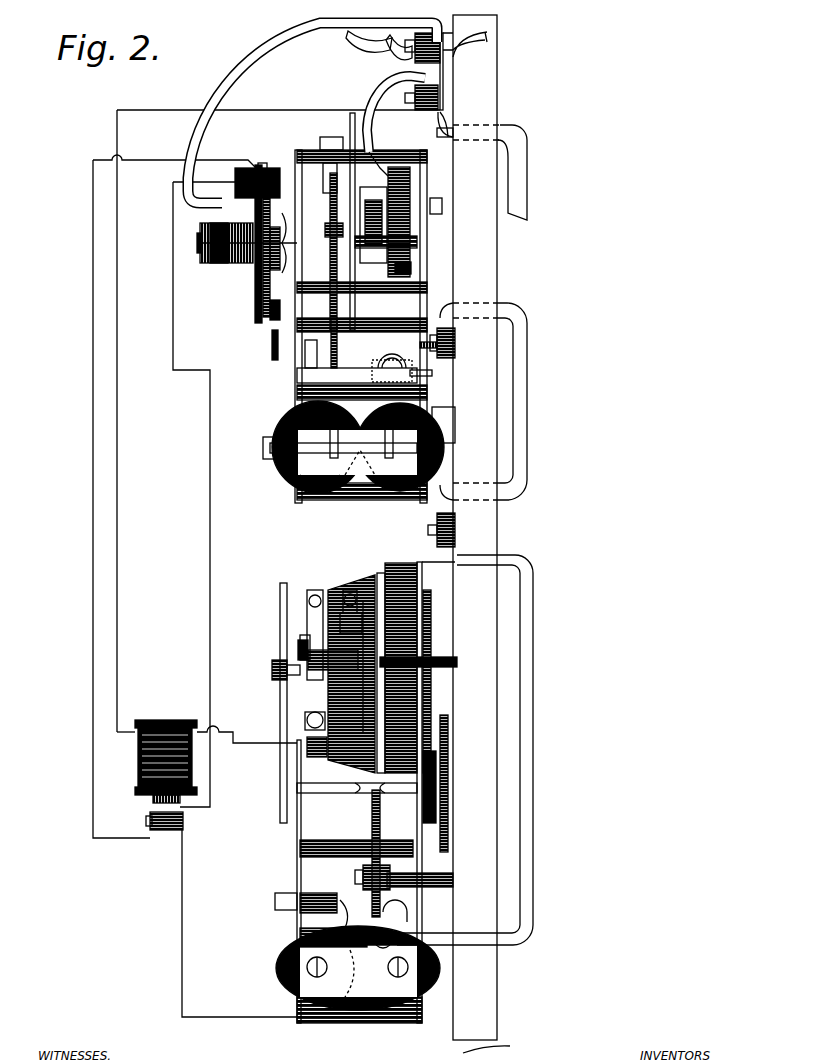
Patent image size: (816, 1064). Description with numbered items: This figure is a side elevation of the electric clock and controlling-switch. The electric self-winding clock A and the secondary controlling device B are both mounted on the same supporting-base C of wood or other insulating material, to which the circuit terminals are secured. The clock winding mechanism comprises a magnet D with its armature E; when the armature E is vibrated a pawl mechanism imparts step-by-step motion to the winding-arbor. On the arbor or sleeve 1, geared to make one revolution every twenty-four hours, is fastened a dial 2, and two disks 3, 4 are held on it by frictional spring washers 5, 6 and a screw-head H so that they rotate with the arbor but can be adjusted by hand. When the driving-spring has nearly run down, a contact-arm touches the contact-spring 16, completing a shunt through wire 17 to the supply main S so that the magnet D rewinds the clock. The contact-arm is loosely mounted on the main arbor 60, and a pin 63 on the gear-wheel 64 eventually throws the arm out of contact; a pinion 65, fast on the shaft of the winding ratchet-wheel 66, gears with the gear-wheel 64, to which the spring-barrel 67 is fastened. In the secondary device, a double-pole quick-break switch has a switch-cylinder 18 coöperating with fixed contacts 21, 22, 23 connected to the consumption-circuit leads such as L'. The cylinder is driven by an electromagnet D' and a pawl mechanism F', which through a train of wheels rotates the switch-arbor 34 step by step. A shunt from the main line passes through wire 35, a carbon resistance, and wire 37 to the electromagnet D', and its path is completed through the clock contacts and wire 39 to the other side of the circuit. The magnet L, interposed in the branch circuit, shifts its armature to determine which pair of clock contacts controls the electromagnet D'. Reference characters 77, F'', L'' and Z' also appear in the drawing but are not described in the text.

The arbor or sleeve 1 is at (279, 243).
The dial 2 is at (264, 168).
The disk 3 is at (247, 297).
The disk 4 is at (256, 314).
The spring washer 5 is at (244, 209).
The spring washer 6 is at (252, 273).
The contact-spring 16 is at (388, 208).
The wire 17 is at (396, 126).
The switch-cylinder 18 is at (300, 647).
The fixed contact 21 is at (314, 596).
The fixed contact 22 is at (350, 594).
The fixed contact 23 is at (320, 750).
The switch-arbor 34 is at (276, 680).
The wire 35 is at (487, 425).
The wire 37 is at (468, 751).
The wire 39 is at (312, 113).
The main arbor 60 is at (325, 251).
The pin 63 is at (417, 256).
The gear-wheel 64 is at (400, 177).
The pinion 65 is at (401, 360).
The winding ratchet-wheel 66 is at (334, 352).
The spring-barrel 67 is at (407, 267).
The shaft 77 is at (359, 221).
The electric self-winding clock A is at (273, 346).
The secondary controlling device B is at (368, 668).
The supporting-base C is at (455, 236).
The magnet D is at (352, 447).
The electromagnet D' is at (341, 951).
The armature E is at (360, 487).
The pawl mechanism F' is at (316, 354).
The escapement F'' is at (358, 877).
The screw-head H is at (247, 258).
The magnet L is at (155, 775).
The lead L' is at (367, 53).
The spring L'' is at (387, 59).
The main S is at (470, 51).
The terminal Z' is at (430, 56).